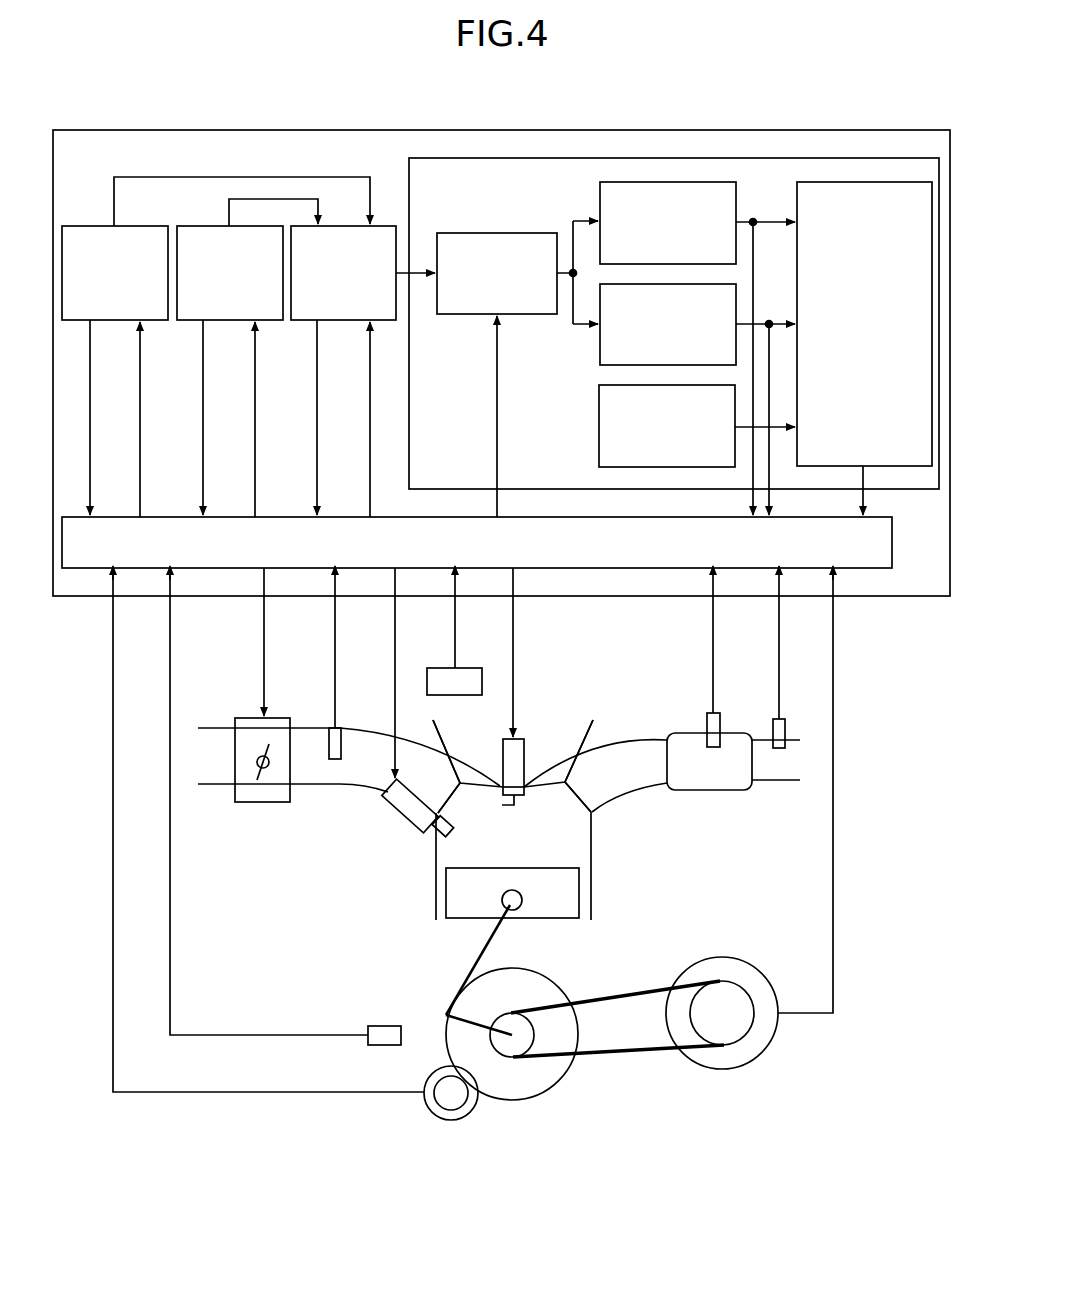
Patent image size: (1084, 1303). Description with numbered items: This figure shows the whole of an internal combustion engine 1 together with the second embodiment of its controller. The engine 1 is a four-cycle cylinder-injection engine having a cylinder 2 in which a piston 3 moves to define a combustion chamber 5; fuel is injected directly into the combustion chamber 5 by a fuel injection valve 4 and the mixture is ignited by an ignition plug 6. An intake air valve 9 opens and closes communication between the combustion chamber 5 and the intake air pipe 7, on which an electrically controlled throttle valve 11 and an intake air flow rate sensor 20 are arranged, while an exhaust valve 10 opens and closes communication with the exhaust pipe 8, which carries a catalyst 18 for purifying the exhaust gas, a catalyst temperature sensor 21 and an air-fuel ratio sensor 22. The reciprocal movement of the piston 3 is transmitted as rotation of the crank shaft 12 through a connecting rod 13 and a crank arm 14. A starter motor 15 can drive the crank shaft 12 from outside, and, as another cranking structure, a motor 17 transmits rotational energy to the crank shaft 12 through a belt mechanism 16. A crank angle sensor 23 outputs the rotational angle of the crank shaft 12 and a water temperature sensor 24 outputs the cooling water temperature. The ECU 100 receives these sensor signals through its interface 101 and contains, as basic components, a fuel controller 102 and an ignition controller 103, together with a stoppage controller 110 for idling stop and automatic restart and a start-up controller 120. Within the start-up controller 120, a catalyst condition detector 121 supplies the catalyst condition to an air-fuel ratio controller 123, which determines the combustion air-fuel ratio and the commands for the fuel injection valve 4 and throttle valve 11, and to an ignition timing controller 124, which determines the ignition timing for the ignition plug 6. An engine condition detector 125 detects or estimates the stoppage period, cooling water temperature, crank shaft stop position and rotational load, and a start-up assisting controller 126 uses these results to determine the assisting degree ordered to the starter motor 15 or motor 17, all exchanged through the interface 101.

The internal combustion engine 1 is at (390, 900).
The cylinder 2 is at (595, 873).
The piston 3 is at (568, 905).
The fuel injection valve 4 is at (400, 822).
The combustion chamber 5 is at (578, 841).
The ignition plug 6 is at (525, 757).
The intake air pipe 7 is at (331, 785).
The exhaust pipe 8 is at (632, 746).
The intake air valve 9 is at (470, 785).
The exhaust valve 10 is at (573, 797).
The throttle valve 11 is at (263, 803).
The crank shaft 12 is at (512, 1048).
The connecting rod 13 is at (493, 941).
The crank arm 14 is at (470, 1025).
The starter motor 15 is at (448, 1121).
The belt 16 is at (626, 1056).
The motor 17 is at (740, 1069).
The catalyst 18 is at (714, 791).
The intake air flow rate sensor 20 is at (328, 727).
The catalyst temperature sensor 21 is at (707, 720).
The air-fuel ratio sensor 22 is at (772, 727).
The crank angle sensor 23 is at (382, 1025).
The water temperature sensor 24 is at (446, 667).
The ECU 100 is at (619, 129).
The interface 101 is at (286, 516).
The fuel controller 102 is at (115, 321).
The ignition controller 103 is at (229, 321).
The stoppage controller 110 is at (345, 321).
The start-up controller 120 is at (811, 156).
The catalyst condition detector 121 is at (453, 315).
The air-fuel ratio controller 123 is at (740, 211).
The ignition timing controller 124 is at (599, 349).
The engine condition detector 125 is at (598, 421).
The start-up assisting controller 126 is at (886, 467).